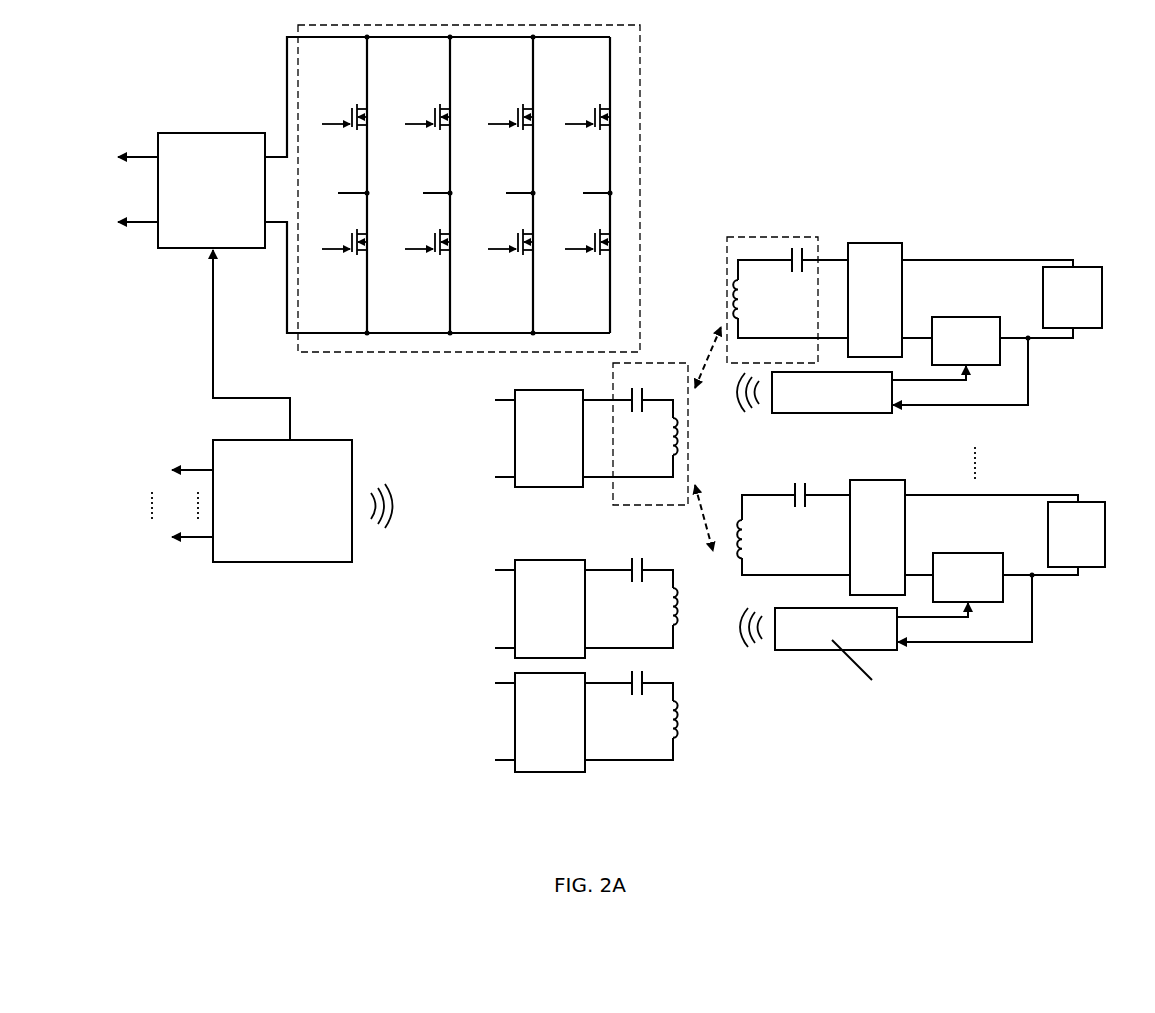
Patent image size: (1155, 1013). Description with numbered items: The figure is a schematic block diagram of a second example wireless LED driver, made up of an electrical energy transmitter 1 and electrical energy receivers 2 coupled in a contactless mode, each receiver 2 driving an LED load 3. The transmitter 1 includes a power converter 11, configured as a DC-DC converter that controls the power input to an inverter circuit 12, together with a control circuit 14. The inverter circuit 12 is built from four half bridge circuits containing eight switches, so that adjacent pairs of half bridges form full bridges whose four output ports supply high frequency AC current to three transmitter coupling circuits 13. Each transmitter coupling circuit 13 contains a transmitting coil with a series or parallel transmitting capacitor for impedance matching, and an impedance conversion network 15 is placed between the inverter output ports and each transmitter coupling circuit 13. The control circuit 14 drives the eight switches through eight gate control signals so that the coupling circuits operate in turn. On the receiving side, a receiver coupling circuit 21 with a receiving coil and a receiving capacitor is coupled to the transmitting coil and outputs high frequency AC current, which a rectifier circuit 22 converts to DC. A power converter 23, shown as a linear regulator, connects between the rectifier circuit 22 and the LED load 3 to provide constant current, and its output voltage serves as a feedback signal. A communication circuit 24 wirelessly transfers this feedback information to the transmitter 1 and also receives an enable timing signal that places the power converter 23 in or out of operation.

The electrical energy transmitter 1 is at (715, 739).
The electrical energy receiver 2 is at (789, 669).
The LED load 3 is at (1085, 267).
The power converter 11 is at (210, 133).
The inverter circuit 12 is at (641, 68).
The transmitter coupling circuit 13 is at (645, 363).
The control circuit 14 is at (305, 562).
The impedance conversion network 15 is at (535, 487).
The receiver coupling circuit 21 is at (770, 237).
The rectifier circuit 22 is at (875, 243).
The power converter 23 is at (970, 317).
The communication circuit 24 is at (850, 413).